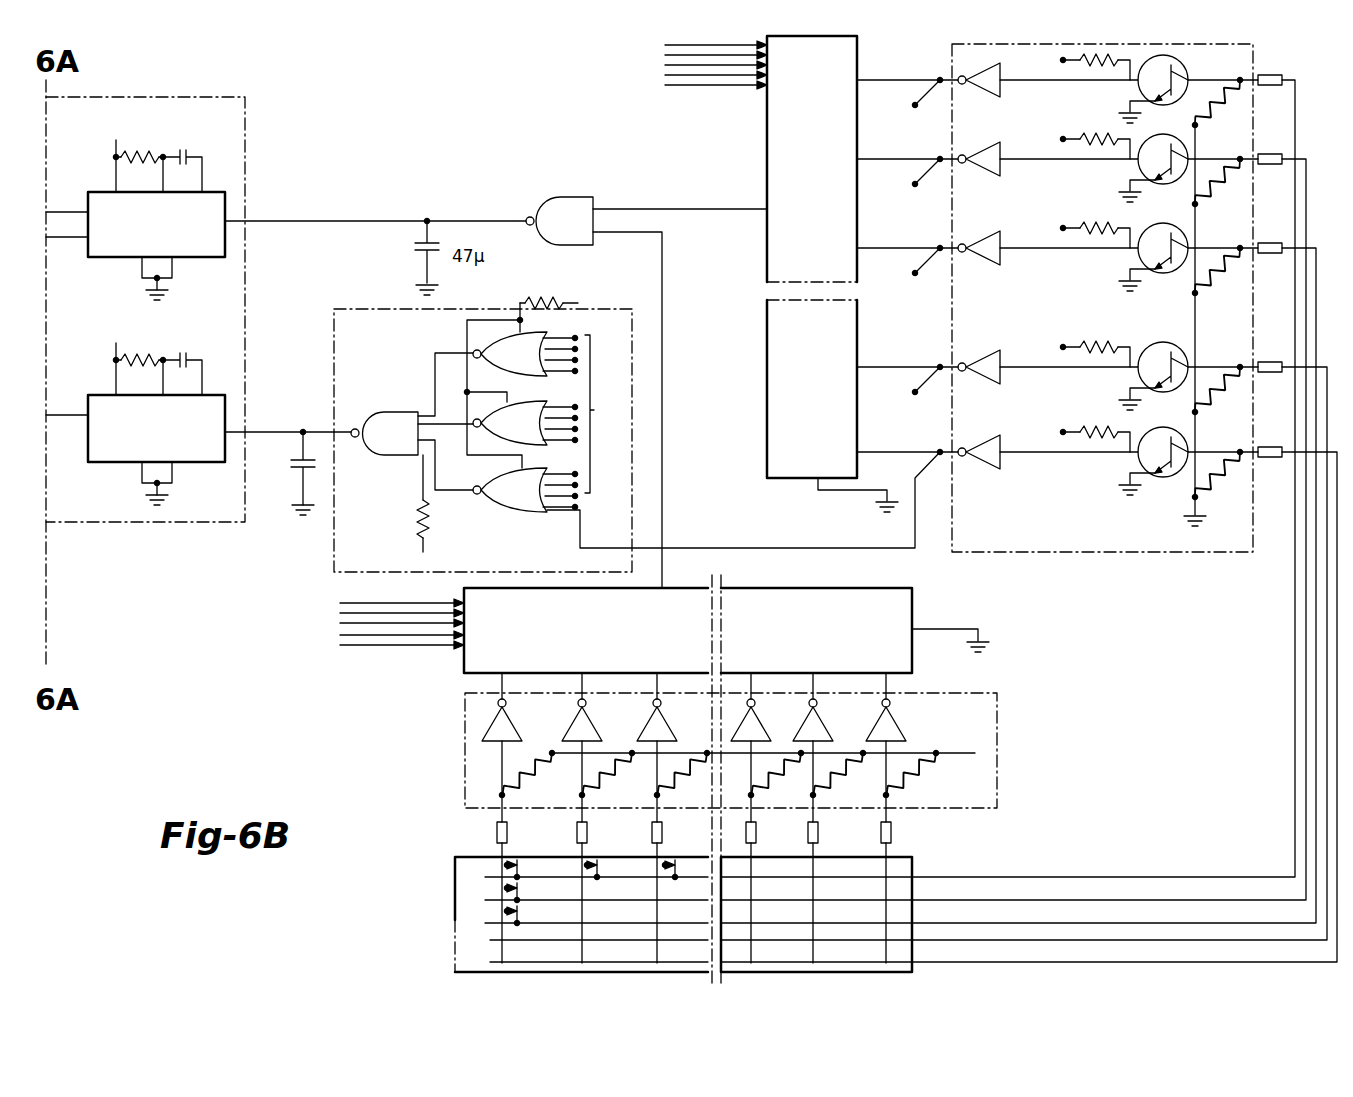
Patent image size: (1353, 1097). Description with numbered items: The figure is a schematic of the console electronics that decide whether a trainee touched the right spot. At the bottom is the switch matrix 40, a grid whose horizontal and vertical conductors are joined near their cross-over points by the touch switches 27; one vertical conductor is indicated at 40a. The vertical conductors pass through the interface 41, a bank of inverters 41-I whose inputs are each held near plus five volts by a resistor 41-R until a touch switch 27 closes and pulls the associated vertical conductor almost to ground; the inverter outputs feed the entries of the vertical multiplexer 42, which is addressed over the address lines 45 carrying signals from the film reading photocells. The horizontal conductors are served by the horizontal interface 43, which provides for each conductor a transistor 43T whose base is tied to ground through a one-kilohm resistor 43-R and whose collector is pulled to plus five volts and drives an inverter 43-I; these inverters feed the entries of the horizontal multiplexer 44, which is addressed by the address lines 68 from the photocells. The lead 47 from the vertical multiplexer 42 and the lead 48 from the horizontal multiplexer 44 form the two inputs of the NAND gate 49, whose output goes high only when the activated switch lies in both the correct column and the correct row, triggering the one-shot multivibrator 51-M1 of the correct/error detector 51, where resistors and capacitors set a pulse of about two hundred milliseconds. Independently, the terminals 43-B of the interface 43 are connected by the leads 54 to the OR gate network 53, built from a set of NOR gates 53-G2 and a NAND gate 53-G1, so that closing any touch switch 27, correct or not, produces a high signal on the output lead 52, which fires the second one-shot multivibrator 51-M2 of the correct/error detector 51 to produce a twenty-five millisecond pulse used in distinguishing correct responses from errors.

The touch switch 27 is at (520, 890).
The switch matrix 40 is at (912, 860).
The vertical conductor 40a is at (500, 850).
The interface 41 is at (997, 750).
The inverter 41-I is at (562, 714).
The resistor 41-R is at (508, 795).
The vertical multiplexer 42 is at (912, 608).
The horizontal interface 43 is at (1258, 62).
The terminals of the interface 43-B is at (940, 79).
The inverter 43-I is at (1000, 144).
The transistor 43T is at (1172, 57).
The resistor 43-R is at (1232, 88).
The horizontal multiplexer 44 is at (858, 50).
The address lines 45 is at (361, 655).
The lead 47 is at (660, 444).
The lead 48 is at (644, 209).
The NAND gate 49 is at (560, 197).
The correct/error detector 51 is at (245, 116).
The one-shot multivibrator 51-M1 is at (210, 193).
The one-shot multivibrator 51-M2 is at (210, 396).
The output lead 52 is at (266, 431).
The OR gate network 53 is at (333, 552).
The NAND gate 53-G1 is at (388, 411).
The NOR gates 53-G2 is at (488, 466).
The leads 54 is at (808, 550).
The address lines 68 is at (728, 88).